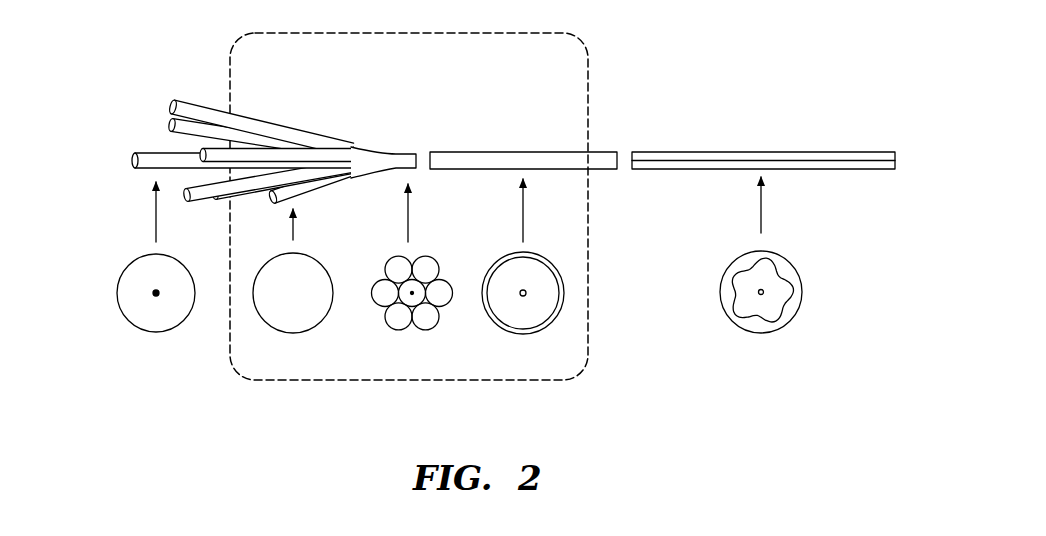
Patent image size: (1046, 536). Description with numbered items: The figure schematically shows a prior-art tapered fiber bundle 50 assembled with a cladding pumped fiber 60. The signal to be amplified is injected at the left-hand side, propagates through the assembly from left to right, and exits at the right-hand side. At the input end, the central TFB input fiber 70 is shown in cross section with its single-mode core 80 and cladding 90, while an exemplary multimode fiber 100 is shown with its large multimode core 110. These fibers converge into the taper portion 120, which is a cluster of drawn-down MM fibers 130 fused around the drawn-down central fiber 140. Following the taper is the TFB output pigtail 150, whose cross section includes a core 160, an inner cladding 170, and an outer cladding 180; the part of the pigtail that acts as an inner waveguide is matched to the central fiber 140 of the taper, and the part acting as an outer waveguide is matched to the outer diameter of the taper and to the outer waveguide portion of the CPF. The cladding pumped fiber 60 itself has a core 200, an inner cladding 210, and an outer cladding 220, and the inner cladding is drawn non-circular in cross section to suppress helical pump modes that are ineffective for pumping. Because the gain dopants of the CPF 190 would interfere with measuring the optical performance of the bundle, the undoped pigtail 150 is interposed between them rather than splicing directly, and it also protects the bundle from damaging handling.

The tapered fiber bundle 50 is at (591, 77).
The cladding pumped fiber 60 is at (810, 152).
The central TFB input fiber 70 is at (117, 293).
The single-mode core 80 is at (153, 296).
The cladding 90 is at (164, 263).
The multimode fiber 100 is at (275, 164).
The multimode core 110 is at (312, 306).
The taper portion 120 is at (357, 135).
The drawn-down MM fibers 130 is at (428, 270).
The drawn-down central fiber 140 is at (414, 291).
The TFB output pigtail 150 is at (557, 267).
The core 160 is at (520, 296).
The inner cladding 170 is at (526, 317).
The outer cladding 180 is at (563, 298).
The cladding pumped fiber 190 is at (799, 256).
The core 200 is at (764, 294).
The inner cladding 210 is at (753, 313).
The outer cladding 220 is at (723, 270).